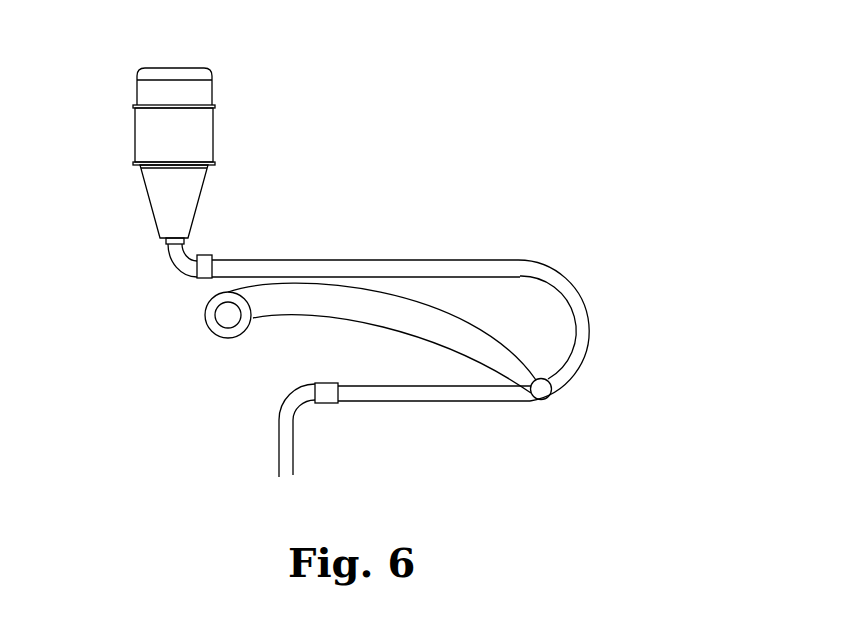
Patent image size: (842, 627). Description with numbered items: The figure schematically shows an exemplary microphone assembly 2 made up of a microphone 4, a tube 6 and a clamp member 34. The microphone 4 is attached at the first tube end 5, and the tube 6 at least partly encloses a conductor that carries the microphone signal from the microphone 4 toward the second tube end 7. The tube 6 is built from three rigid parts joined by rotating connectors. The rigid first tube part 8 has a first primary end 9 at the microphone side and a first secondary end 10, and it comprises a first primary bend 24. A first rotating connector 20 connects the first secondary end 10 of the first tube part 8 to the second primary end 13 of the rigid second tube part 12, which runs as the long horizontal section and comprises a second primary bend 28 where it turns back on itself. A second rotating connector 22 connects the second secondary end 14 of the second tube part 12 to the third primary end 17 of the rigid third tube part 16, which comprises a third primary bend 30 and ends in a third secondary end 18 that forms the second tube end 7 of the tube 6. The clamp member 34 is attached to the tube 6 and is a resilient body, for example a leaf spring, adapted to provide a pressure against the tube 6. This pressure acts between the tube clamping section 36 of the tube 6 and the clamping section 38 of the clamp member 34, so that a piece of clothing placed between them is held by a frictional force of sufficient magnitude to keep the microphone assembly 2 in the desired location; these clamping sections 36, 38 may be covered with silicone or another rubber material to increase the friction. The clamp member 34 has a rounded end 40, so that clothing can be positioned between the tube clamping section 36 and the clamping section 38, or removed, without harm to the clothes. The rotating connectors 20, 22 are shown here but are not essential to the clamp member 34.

The microphone assembly 2 is at (634, 108).
The microphone 4 is at (213, 137).
The first tube end 5 is at (126, 214).
The first primary end 9 is at (160, 239).
The first tube part 8 is at (172, 258).
The first primary bend 24 is at (177, 268).
The first secondary end 10 is at (255, 225).
The second primary end 13 is at (255, 225).
The first rotating connector 20 is at (212, 256).
The tube 6 is at (273, 260).
The tube clamping section 36 is at (342, 264).
The second tube part 12 is at (433, 260).
The clamp member 34 is at (332, 314).
The clamping section 38 is at (309, 290).
The rounded end 40 is at (205, 318).
The second primary bend 28 is at (587, 350).
The second secondary end 14 is at (362, 430).
The third primary end 17 is at (362, 430).
The second rotating connector 22 is at (317, 405).
The third tube part 16 is at (279, 427).
The third primary bend 30 is at (290, 393).
The second tube end 7 is at (330, 469).
The third secondary end 18 is at (293, 475).